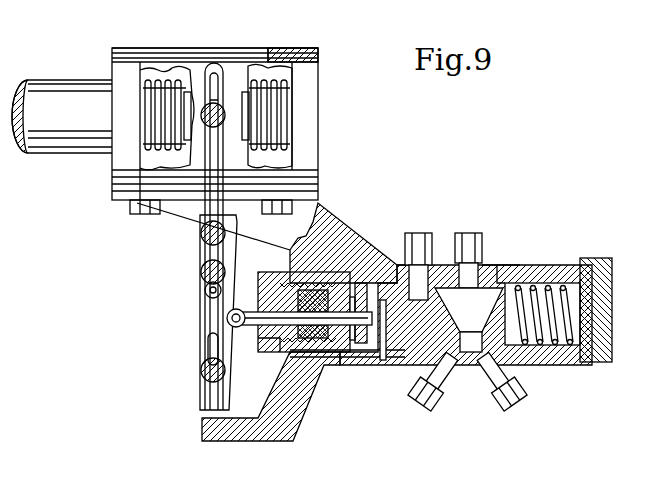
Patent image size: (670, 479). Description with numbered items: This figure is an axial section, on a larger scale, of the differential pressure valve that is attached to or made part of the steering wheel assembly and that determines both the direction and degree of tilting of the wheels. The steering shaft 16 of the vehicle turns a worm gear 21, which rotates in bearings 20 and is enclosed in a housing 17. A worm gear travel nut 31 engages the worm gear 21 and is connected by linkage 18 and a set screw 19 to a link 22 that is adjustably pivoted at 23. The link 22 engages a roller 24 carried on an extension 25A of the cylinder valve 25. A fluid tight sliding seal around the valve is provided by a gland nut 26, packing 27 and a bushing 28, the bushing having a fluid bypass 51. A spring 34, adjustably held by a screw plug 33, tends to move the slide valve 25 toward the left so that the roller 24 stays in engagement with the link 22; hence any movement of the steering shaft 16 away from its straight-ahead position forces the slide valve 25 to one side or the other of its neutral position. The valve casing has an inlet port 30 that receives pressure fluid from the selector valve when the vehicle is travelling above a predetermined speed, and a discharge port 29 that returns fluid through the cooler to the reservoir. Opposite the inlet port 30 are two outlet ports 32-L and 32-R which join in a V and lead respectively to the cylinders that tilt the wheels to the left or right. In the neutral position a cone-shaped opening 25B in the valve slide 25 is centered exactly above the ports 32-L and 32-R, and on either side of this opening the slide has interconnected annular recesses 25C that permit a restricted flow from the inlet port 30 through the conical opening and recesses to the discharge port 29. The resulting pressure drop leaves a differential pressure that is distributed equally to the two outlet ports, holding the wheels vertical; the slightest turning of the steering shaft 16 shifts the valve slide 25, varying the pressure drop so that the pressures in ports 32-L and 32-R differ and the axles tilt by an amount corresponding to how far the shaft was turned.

The steering shaft 16 is at (68, 95).
The housing 17 is at (236, 60).
The linkage 18 is at (209, 218).
The set screw 19 is at (205, 272).
The bearings 20 is at (300, 118).
The worm gear 21 is at (158, 95).
The link 22 is at (210, 305).
The pivot 23 is at (207, 366).
The roller 24 is at (236, 328).
The cylinder valve 25 is at (448, 262).
The extension 25A is at (262, 352).
The cone-shaped opening 25B is at (504, 272).
The annular recesses 25C is at (403, 258).
The gland nut 26 is at (260, 292).
The packing 27 is at (340, 235).
The bushing 28 is at (342, 362).
The discharge port 29 is at (440, 262).
The inlet port 30 is at (473, 245).
The worm gear travel nut 31 is at (205, 108).
The left outlet port 32-L is at (425, 398).
The right outlet port 32-R is at (520, 398).
The screw plug 33 is at (600, 310).
The spring 34 is at (565, 345).
The fluid bypass 51 is at (383, 362).